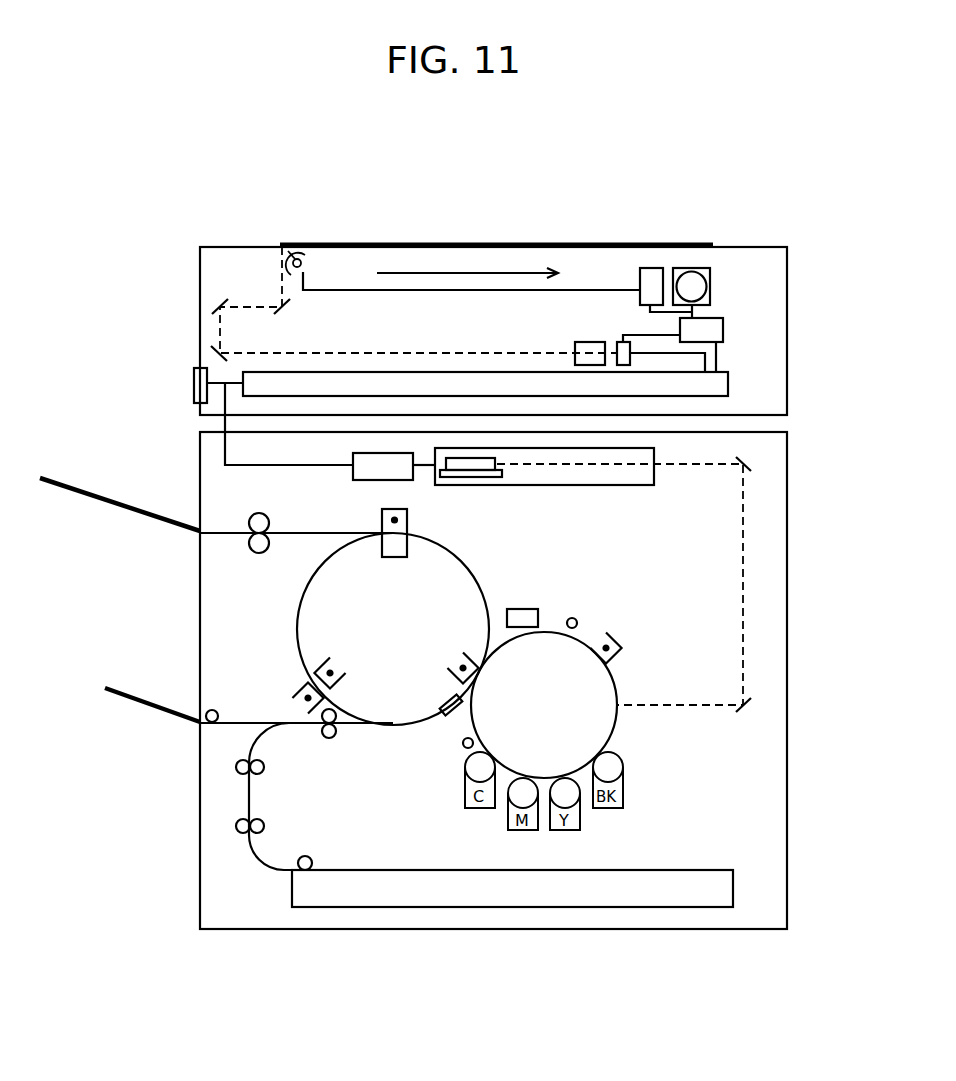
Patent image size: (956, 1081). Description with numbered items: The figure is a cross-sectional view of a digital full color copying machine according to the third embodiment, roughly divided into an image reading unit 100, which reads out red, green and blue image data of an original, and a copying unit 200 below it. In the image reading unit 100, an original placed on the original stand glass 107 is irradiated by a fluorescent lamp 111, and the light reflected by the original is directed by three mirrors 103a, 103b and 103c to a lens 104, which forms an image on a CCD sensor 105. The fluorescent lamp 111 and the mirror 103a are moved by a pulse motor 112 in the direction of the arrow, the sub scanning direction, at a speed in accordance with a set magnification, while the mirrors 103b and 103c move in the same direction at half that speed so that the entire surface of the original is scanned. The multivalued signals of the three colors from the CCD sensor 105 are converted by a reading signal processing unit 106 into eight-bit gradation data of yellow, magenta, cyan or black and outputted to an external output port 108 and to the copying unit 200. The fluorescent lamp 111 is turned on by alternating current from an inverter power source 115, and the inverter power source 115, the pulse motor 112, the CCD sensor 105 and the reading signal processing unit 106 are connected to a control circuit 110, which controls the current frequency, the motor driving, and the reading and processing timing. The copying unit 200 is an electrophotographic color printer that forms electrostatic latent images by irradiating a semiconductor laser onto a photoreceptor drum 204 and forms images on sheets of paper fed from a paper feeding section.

The image reading unit 100 is at (797, 313).
The copying unit 200 is at (797, 556).
The mirror 103a is at (286, 304).
The mirror 103b is at (218, 303).
The mirror 103c is at (216, 351).
The lens 104 is at (588, 344).
The CCD sensor 105 is at (621, 340).
The reading signal processing unit 106 is at (719, 386).
The original stand glass 107 is at (460, 244).
The external output port 108 is at (194, 384).
The control circuit 110 is at (718, 326).
The fluorescent lamp 111 is at (313, 266).
The pulse motor 112 is at (710, 272).
The inverter power source 115 is at (650, 283).
The photoreceptor drum 204 is at (569, 714).